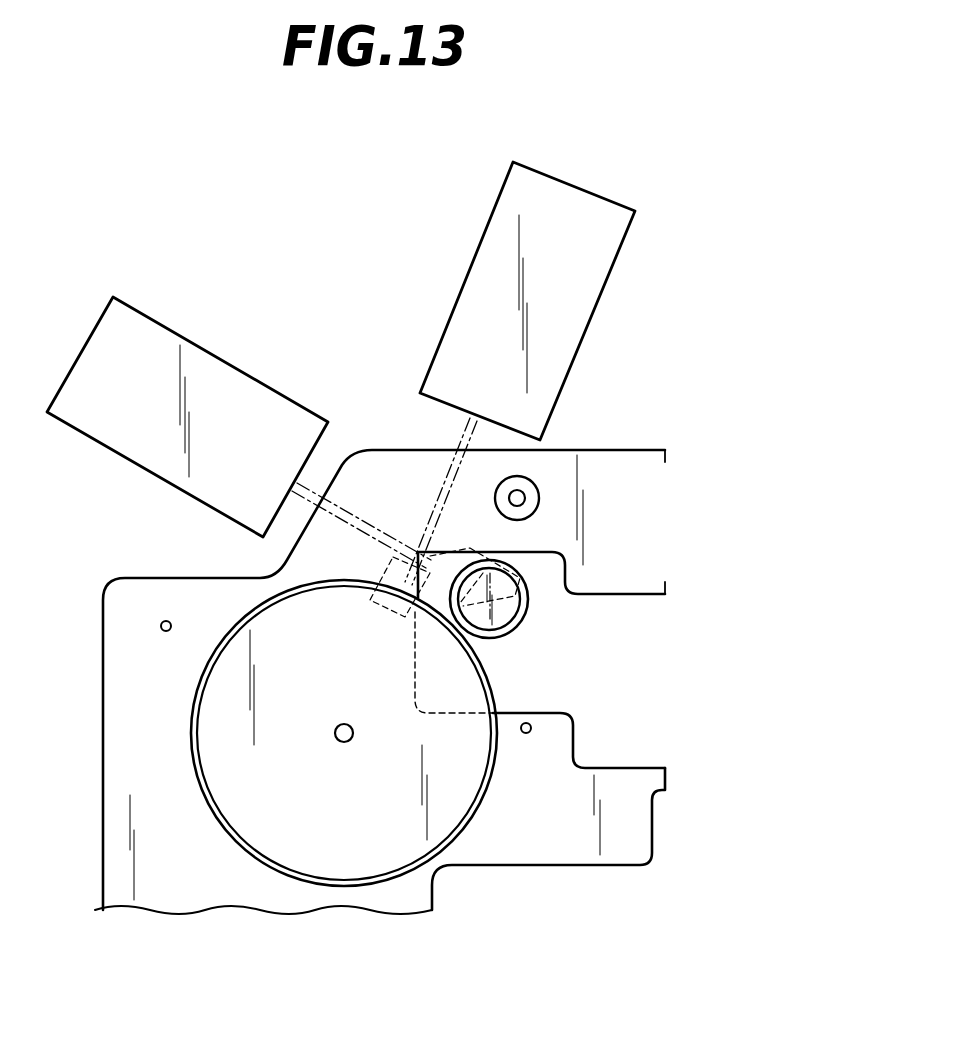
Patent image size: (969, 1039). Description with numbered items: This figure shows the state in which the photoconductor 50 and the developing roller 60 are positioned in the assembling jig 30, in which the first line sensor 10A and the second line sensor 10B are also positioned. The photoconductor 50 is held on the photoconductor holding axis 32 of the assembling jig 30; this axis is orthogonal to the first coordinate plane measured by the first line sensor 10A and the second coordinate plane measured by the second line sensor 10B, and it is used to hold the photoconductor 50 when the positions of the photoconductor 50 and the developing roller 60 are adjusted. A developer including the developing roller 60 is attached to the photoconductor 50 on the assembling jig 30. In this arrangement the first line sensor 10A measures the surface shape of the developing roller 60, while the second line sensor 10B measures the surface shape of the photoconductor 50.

The assembling jig 30 is at (734, 312).
The first line sensor 10A is at (177, 330).
The second line sensor 10B is at (617, 260).
The developing roller 60 is at (520, 618).
The photoconductor 50 is at (193, 695).
The photoconductor holding axis 32 is at (336, 737).